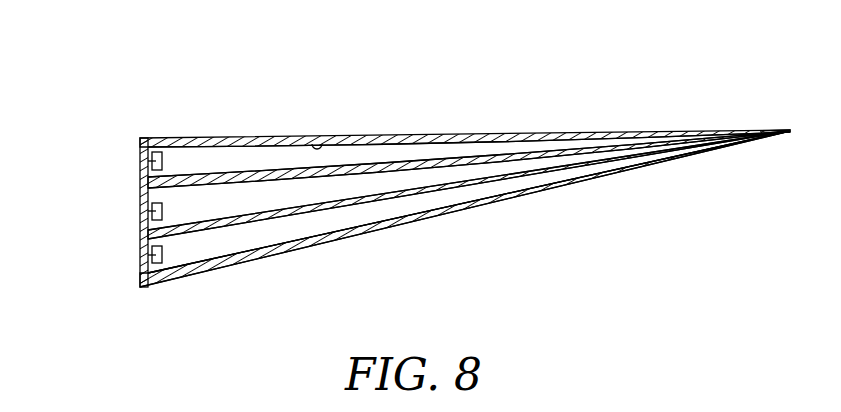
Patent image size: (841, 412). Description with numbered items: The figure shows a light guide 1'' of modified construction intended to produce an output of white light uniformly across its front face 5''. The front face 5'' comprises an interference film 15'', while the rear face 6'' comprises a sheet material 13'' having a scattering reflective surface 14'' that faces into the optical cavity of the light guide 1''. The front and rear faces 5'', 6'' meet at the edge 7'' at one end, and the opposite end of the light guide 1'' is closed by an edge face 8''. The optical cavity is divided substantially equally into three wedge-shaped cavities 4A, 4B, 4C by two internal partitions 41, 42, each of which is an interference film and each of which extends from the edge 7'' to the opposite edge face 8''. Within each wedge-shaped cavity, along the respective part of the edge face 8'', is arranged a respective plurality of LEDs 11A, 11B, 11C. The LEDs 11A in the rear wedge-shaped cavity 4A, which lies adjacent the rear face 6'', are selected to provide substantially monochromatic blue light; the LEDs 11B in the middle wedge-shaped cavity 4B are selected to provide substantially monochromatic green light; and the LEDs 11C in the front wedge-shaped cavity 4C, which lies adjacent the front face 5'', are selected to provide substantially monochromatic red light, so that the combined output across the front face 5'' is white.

The light guide 1'' is at (421, 173).
The rear wedge-shaped cavity 4A is at (227, 245).
The middle wedge-shaped cavity 4B is at (284, 197).
The front wedge-shaped cavity 4C is at (193, 155).
The front face 5'' is at (465, 118).
The rear face 6'' is at (465, 209).
The edge 7'' is at (775, 100).
The edge face 8'' is at (115, 229).
The LEDs 11A is at (148, 255).
The LEDs 11B is at (148, 211).
The LEDs 11C is at (148, 161).
The sheet material 13'' is at (469, 202).
The scattering reflective surface 14'' is at (465, 209).
The interference film 15'' is at (330, 119).
The internal partition 41 is at (362, 207).
The internal partition 42 is at (418, 165).